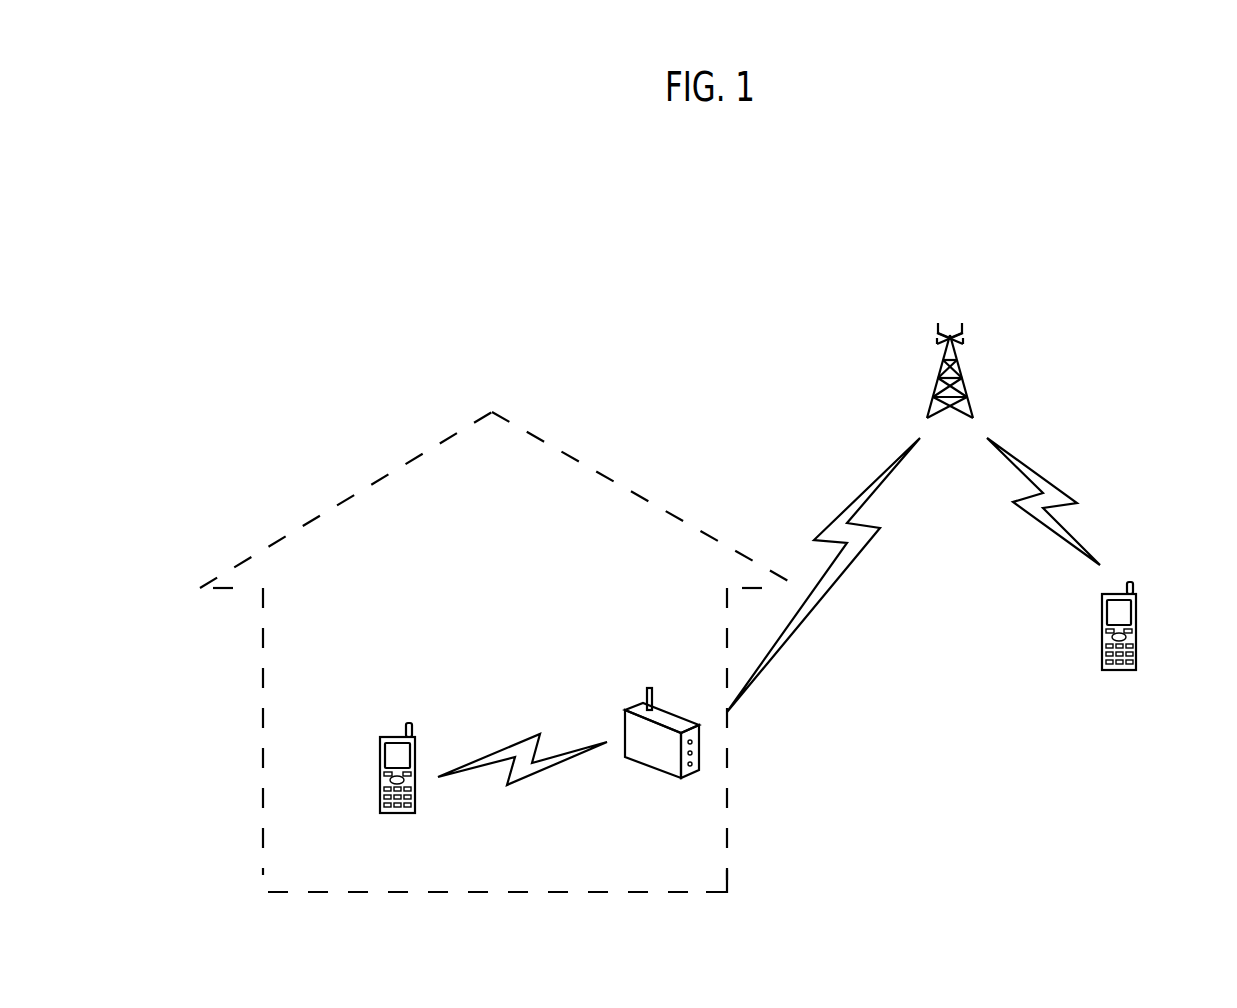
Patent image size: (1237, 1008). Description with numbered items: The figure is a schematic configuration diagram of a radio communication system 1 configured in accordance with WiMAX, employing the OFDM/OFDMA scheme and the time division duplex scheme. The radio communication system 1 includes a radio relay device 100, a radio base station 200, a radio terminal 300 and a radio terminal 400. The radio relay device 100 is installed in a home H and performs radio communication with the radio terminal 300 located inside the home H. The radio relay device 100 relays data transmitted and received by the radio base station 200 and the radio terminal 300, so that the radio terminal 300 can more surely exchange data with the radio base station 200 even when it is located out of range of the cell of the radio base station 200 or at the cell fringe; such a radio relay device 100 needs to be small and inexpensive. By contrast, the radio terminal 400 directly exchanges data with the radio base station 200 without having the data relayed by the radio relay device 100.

The radio communication system 1 is at (1030, 213).
The radio relay device 100 is at (667, 710).
The radio base station 200 is at (965, 365).
The radio terminal 300 is at (380, 758).
The radio terminal 400 is at (1138, 632).
The home H is at (592, 464).